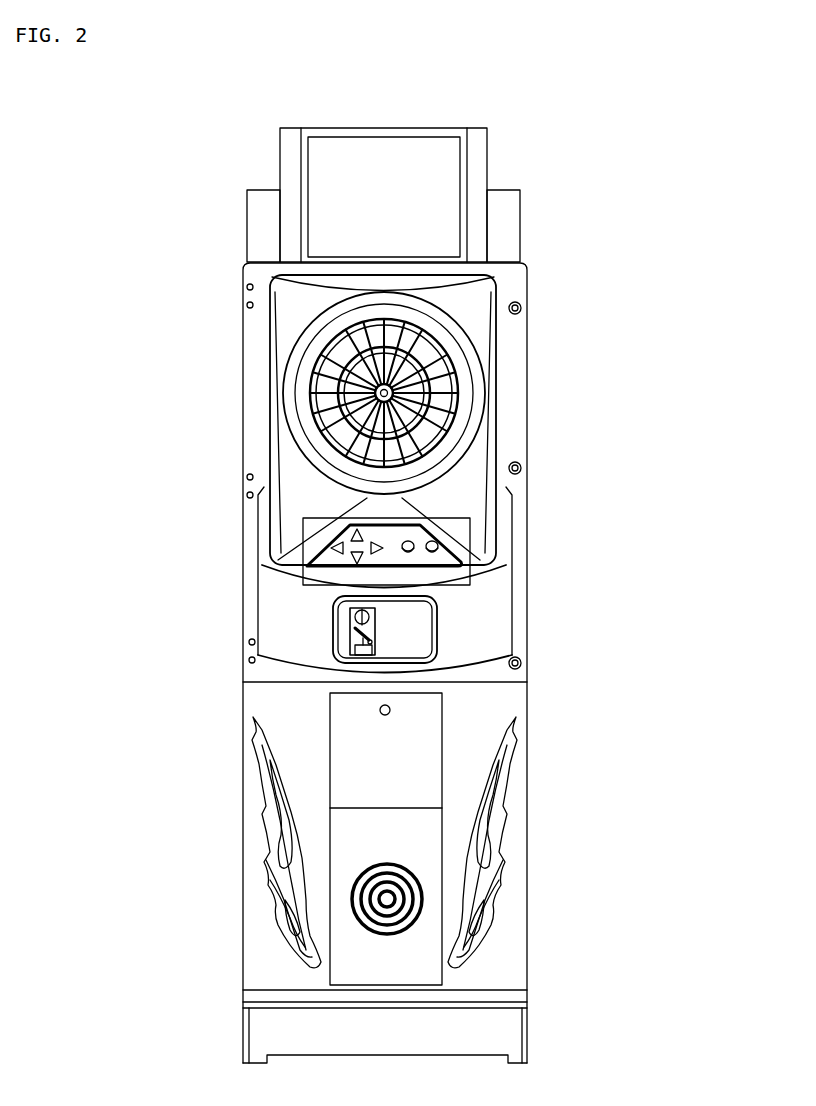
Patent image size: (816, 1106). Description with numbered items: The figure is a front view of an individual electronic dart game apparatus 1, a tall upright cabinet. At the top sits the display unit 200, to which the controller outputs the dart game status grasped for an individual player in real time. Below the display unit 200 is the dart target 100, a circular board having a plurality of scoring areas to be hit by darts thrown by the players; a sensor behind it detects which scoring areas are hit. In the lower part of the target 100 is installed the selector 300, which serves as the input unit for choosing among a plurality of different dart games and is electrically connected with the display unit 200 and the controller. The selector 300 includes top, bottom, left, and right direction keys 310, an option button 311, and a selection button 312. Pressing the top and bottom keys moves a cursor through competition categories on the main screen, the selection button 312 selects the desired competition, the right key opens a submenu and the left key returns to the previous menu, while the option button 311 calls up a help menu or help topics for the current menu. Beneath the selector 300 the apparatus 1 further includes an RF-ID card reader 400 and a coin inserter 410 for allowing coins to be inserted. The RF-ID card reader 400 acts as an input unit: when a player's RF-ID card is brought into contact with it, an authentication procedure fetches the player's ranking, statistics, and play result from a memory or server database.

The electronic dart game apparatus 1 is at (672, 157).
The dart target 100 is at (460, 373).
The display unit 200 is at (293, 226).
The selector 300 is at (468, 578).
The direction keys 310 is at (380, 544).
The option button 311 is at (412, 543).
The selection button 312 is at (435, 551).
The RF-ID card reader 400 is at (410, 638).
The coin inserter 410 is at (349, 613).